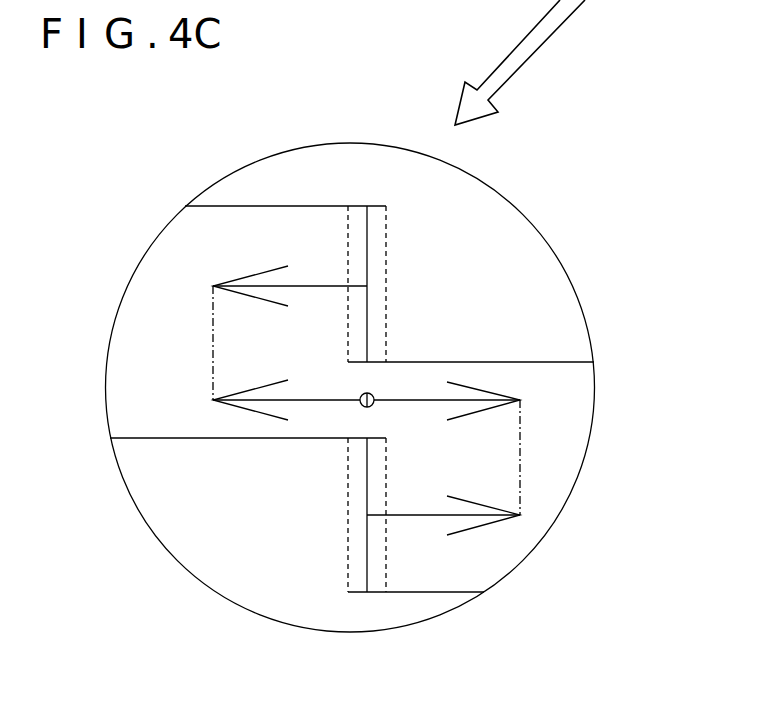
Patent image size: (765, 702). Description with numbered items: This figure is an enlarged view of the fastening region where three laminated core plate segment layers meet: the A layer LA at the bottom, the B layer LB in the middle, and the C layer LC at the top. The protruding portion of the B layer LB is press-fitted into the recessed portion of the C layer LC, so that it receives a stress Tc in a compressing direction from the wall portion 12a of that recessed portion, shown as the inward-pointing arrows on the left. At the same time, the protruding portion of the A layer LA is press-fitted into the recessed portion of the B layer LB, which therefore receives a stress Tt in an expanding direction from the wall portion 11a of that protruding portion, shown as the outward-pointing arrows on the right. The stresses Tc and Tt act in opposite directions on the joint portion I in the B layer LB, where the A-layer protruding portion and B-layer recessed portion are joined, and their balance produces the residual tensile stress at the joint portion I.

The wall portion of the protruding portion 11a is at (357, 555).
The wall portion of the recessed portion 12a is at (367, 247).
The joint portion I is at (397, 372).
The stress in a compressing direction Tc is at (290, 340).
The stress in an expanding direction Tt is at (443, 454).
The A layer LA is at (170, 538).
The B layer LB is at (123, 378).
The C layer LC is at (238, 180).